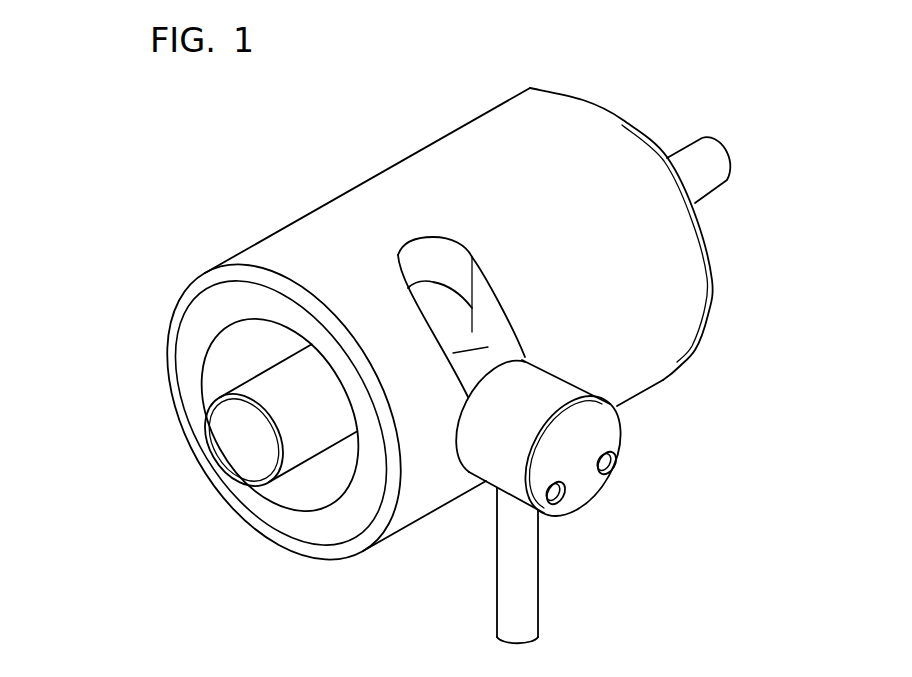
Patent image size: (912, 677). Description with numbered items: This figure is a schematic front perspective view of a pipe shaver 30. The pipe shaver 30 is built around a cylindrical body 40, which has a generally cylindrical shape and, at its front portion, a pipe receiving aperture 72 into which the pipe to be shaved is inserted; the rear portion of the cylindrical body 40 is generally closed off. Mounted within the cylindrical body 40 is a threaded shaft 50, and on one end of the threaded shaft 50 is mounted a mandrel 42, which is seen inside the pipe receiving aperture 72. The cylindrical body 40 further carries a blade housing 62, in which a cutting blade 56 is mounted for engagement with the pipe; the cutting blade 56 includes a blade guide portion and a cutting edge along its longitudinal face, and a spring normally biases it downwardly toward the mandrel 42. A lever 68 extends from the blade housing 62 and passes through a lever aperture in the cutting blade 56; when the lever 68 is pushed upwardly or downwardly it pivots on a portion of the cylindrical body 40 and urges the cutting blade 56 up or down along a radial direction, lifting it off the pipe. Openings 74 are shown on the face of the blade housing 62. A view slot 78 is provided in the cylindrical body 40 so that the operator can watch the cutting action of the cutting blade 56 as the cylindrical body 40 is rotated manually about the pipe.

The pipe shaver 30 is at (668, 380).
The cylindrical body 40 is at (576, 127).
The mandrel 42 is at (297, 471).
The threaded shaft 50 is at (698, 165).
The cutting blade 56 is at (470, 363).
The blade housing 62 is at (593, 435).
The lever 68 is at (515, 617).
The pipe receiving aperture 72 is at (203, 367).
The holes 74 is at (563, 503).
The view slot 78 is at (423, 250).